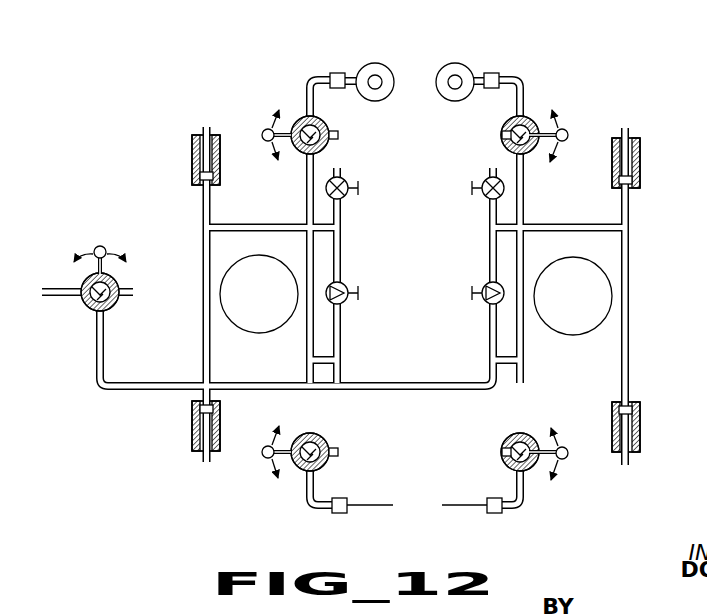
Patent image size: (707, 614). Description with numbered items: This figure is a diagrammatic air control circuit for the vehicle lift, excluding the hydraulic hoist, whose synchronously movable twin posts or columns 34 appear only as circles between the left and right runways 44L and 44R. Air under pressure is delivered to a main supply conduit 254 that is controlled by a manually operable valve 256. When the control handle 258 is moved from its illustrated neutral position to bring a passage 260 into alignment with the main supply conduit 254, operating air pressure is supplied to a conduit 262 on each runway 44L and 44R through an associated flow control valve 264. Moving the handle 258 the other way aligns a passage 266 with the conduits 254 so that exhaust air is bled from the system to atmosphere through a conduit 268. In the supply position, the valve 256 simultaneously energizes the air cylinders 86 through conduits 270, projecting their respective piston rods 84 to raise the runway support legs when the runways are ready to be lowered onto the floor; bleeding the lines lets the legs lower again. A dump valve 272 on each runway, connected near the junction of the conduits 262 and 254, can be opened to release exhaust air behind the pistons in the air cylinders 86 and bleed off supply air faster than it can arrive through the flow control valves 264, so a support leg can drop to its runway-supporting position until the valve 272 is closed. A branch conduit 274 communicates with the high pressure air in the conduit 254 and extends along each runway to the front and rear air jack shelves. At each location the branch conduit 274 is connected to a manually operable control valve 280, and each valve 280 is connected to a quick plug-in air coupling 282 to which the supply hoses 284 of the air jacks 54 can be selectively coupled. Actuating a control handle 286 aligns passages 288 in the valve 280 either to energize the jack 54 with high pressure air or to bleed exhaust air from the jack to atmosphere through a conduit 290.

The twin-posts or columns 34 is at (243, 317).
The left runway 44L is at (207, 99).
The right runway 44R is at (625, 100).
The air jack 54 is at (381, 64).
The piston rod 84 is at (203, 127).
The air cylinder 86 is at (192, 143).
The main supply conduit 254 is at (343, 252).
The manually operable valve 256 is at (95, 315).
The control handle 258 is at (102, 246).
The passage 260 is at (88, 281).
The conduit 262 is at (257, 223).
The flow control valve 264 is at (350, 290).
The passage 266 is at (120, 302).
The conduit 268 is at (125, 285).
The conduit 270 is at (630, 250).
The dump valve 272 is at (360, 197).
The branch conduit 274 is at (307, 342).
The manually operable control valve 280 is at (302, 117).
The quick plug-in air coupling 282 is at (337, 73).
The supply hose 284 is at (359, 99).
The control handle 286 is at (262, 139).
The passages 288 is at (321, 147).
The conduit 290 is at (338, 134).